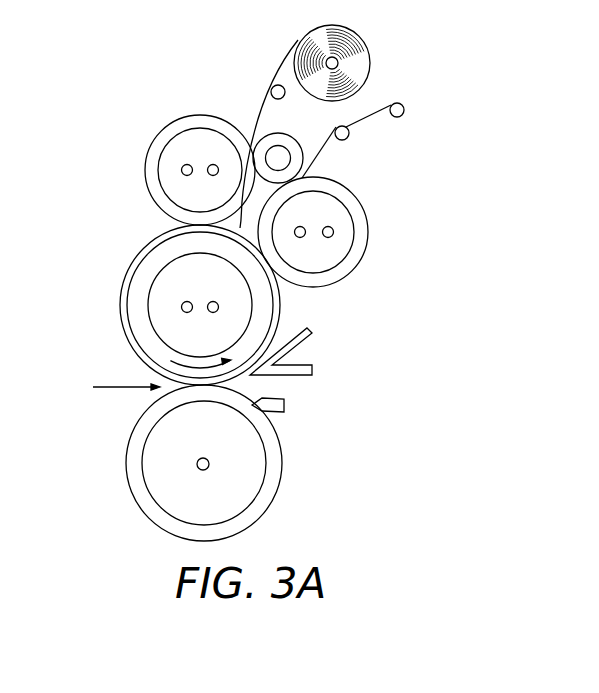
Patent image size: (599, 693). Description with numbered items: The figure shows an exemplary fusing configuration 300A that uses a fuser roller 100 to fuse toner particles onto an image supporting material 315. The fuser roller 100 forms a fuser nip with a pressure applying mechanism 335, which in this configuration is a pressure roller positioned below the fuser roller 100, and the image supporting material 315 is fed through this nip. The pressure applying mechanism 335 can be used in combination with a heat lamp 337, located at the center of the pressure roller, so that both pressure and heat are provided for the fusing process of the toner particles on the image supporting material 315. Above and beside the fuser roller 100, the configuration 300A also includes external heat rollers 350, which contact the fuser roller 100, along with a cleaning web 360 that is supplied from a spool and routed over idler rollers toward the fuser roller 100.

The fusing configuration 300A is at (181, 67).
The cleaning web 360 is at (394, 67).
The external heat roller 350 is at (160, 133).
The fuser roller 100 is at (129, 255).
The image supporting material 315 is at (128, 388).
The pressure applying mechanism 335 is at (291, 434).
The heat lamp 337 is at (200, 471).